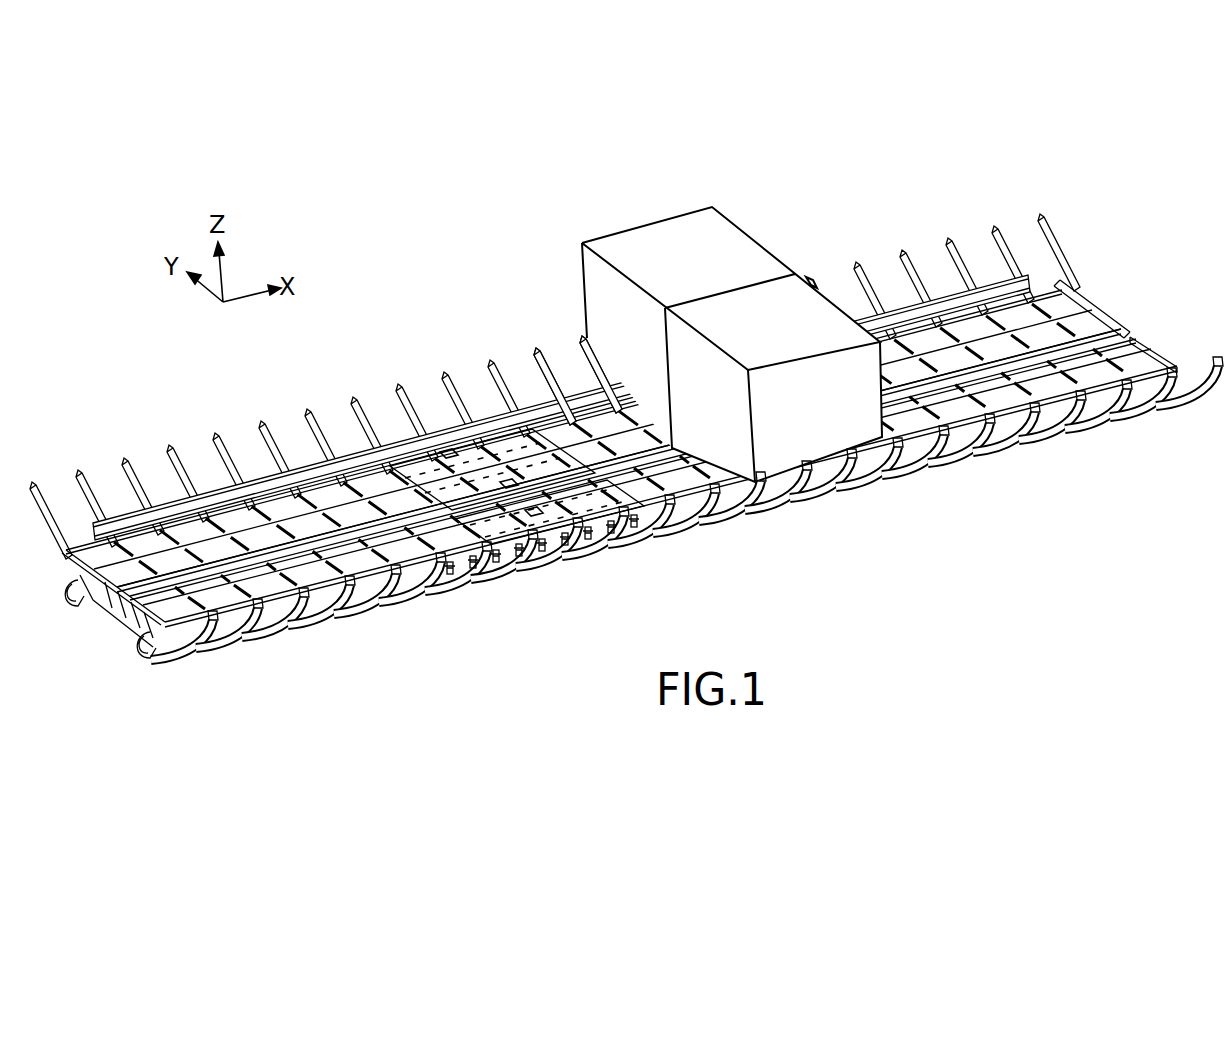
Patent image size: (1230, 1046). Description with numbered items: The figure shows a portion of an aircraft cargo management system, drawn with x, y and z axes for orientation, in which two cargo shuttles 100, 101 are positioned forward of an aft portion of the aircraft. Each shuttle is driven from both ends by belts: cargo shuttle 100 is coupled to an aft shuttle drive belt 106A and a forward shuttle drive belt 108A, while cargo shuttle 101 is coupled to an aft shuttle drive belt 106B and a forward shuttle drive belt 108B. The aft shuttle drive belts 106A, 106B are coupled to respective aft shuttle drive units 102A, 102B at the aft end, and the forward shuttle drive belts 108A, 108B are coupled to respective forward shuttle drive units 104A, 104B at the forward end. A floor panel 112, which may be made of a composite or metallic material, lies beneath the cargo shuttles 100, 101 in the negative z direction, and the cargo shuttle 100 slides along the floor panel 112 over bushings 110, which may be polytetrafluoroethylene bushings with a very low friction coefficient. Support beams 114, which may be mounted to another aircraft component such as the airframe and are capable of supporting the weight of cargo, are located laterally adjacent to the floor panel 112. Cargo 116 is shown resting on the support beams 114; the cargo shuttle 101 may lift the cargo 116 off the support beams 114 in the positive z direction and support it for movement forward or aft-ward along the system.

The cargo shuttle 100 is at (670, 543).
The cargo shuttle 101 is at (357, 452).
The aft shuttle drive unit 102A is at (150, 665).
The aft shuttle drive unit 102B is at (68, 590).
The forward shuttle drive unit 104A is at (1178, 362).
The forward shuttle drive unit 104B is at (1122, 330).
The aft shuttle drive belt 106A is at (392, 582).
The aft shuttle drive belt 106B is at (327, 507).
The forward shuttle drive belt 108A is at (1017, 433).
The forward shuttle drive belt 108B is at (967, 333).
The bushings 110 is at (283, 600).
The floor panel 112 is at (180, 530).
The support beams 114 is at (675, 447).
The cargo 116 is at (590, 243).